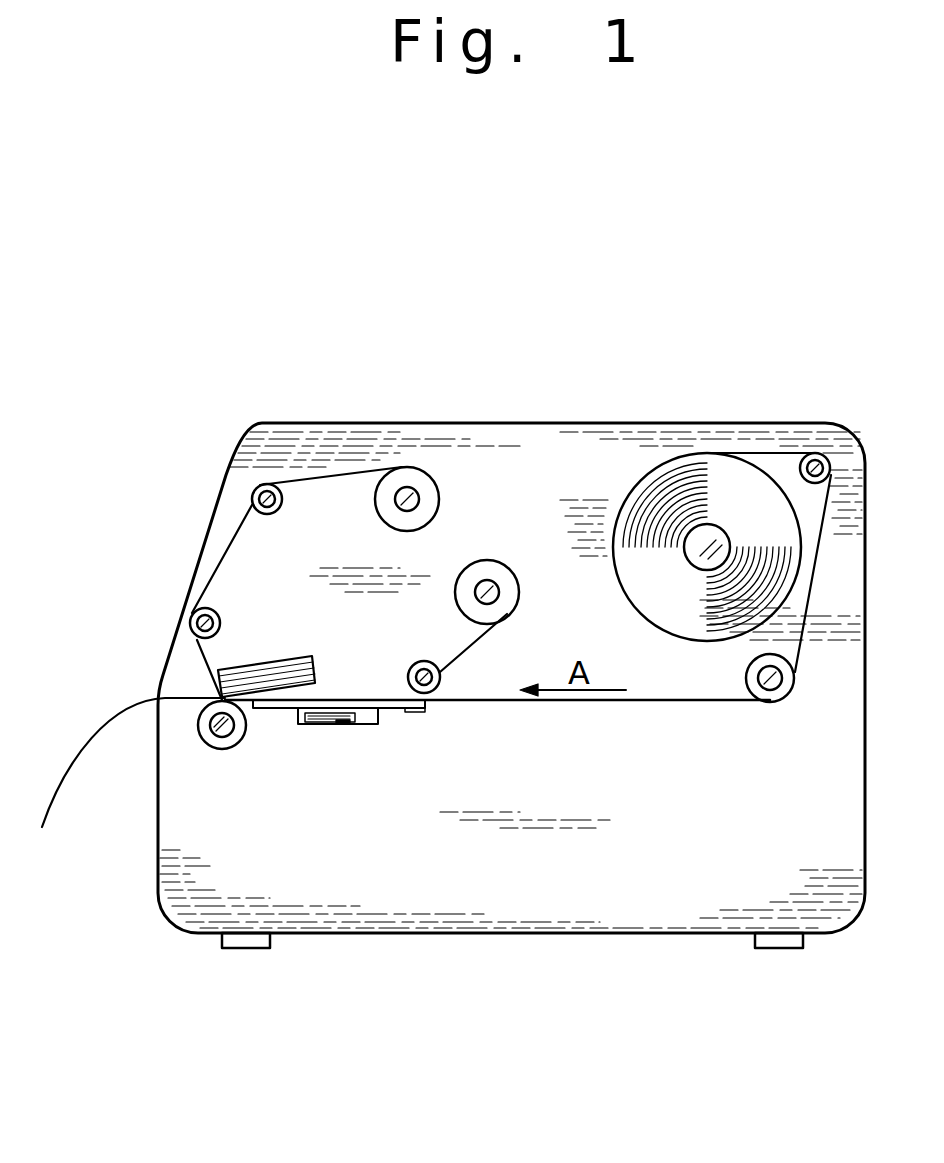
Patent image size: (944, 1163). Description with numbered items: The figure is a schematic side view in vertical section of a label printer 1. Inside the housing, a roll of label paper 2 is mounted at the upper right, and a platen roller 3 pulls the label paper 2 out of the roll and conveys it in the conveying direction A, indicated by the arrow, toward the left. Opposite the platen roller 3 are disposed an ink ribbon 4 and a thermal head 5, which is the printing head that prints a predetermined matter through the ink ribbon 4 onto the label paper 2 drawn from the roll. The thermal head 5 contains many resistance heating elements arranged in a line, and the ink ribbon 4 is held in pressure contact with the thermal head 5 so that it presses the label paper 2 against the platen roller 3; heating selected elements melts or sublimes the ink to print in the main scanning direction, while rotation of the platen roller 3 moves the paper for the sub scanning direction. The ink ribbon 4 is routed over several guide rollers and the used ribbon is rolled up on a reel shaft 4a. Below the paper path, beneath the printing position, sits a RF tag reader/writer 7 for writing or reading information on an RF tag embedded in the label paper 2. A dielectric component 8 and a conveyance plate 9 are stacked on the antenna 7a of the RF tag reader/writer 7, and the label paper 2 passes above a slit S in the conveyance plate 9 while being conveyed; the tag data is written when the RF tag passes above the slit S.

The label printer 1 is at (762, 387).
The label paper 2 is at (690, 465).
The platen roller 3 is at (212, 750).
The ink ribbon 4 is at (316, 480).
The reel shaft 4a is at (414, 492).
The thermal head 5 is at (262, 660).
The RF tag reader/writer 7 is at (261, 757).
The antenna 7a is at (335, 726).
The dielectric component 8 is at (300, 726).
The slit S is at (345, 726).
The conveyance plate 9 is at (410, 712).